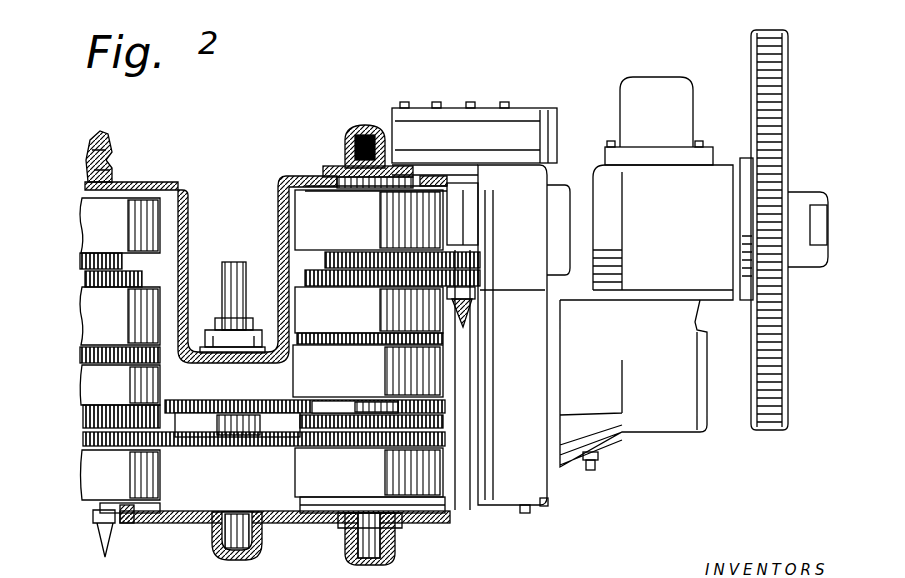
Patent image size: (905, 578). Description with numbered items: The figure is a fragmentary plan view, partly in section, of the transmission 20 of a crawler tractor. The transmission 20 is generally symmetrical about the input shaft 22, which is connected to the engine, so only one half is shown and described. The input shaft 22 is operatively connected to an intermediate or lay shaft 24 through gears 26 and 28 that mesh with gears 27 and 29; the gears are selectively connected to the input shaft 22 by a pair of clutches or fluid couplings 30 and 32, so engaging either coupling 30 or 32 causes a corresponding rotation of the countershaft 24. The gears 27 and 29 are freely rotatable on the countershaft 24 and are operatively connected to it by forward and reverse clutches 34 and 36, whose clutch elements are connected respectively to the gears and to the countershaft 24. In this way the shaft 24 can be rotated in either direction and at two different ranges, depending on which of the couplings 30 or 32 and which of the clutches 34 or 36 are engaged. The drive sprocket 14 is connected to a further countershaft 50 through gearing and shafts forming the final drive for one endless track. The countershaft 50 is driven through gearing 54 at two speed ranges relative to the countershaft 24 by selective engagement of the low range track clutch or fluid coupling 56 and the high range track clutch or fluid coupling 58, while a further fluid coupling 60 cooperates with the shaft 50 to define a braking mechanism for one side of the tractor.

The drive sprocket 14 is at (783, 66).
The transmission 20 is at (305, 138).
The input shaft 22 is at (232, 269).
The intermediate or lay shaft 24 is at (400, 403).
The gear 26 is at (178, 447).
The gear 27 is at (100, 441).
The gear 28 is at (165, 374).
The gear 29 is at (100, 419).
The clutch or fluid coupling 30 is at (288, 492).
The clutch or fluid coupling 32 is at (196, 387).
The forward clutch 34 is at (96, 398).
The reverse clutch 36 is at (96, 488).
The countershaft 50 is at (474, 219).
The gearing 54 is at (471, 294).
The low range track clutch or fluid coupling 56 is at (96, 324).
The high range track clutch or fluid coupling 58 is at (93, 229).
The fluid coupling 60 is at (474, 132).